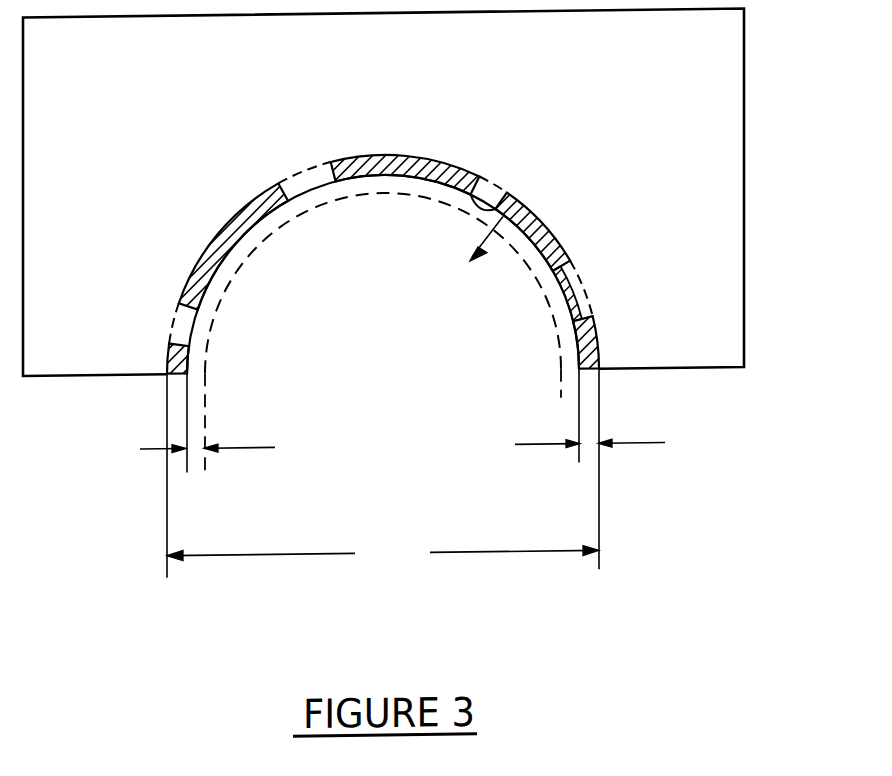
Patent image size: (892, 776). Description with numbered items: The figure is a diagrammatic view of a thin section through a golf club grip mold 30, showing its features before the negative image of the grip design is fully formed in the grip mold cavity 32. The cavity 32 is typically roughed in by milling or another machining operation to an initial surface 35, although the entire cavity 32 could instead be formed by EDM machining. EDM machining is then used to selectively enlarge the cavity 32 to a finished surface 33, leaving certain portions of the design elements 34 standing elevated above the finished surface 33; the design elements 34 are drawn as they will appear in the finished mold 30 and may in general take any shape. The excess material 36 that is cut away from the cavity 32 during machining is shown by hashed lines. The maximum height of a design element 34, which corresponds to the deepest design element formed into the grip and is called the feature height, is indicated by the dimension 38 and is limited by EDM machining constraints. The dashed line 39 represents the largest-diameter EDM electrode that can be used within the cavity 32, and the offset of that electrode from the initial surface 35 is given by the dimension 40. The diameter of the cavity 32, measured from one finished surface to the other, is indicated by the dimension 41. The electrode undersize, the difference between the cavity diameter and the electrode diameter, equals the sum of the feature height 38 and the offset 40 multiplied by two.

The golf club grip mold 30 is at (745, 221).
The grip mold cavity 32 is at (522, 201).
The finished surface 33 is at (550, 235).
The design elements 34 is at (298, 173).
The initial surface 35 is at (562, 267).
The excess material 36 is at (599, 336).
The feature height dimension 38 is at (588, 459).
The dashed line 39 is at (222, 295).
The offset dimension 40 is at (197, 465).
The cavity diameter dimension 41 is at (383, 556).